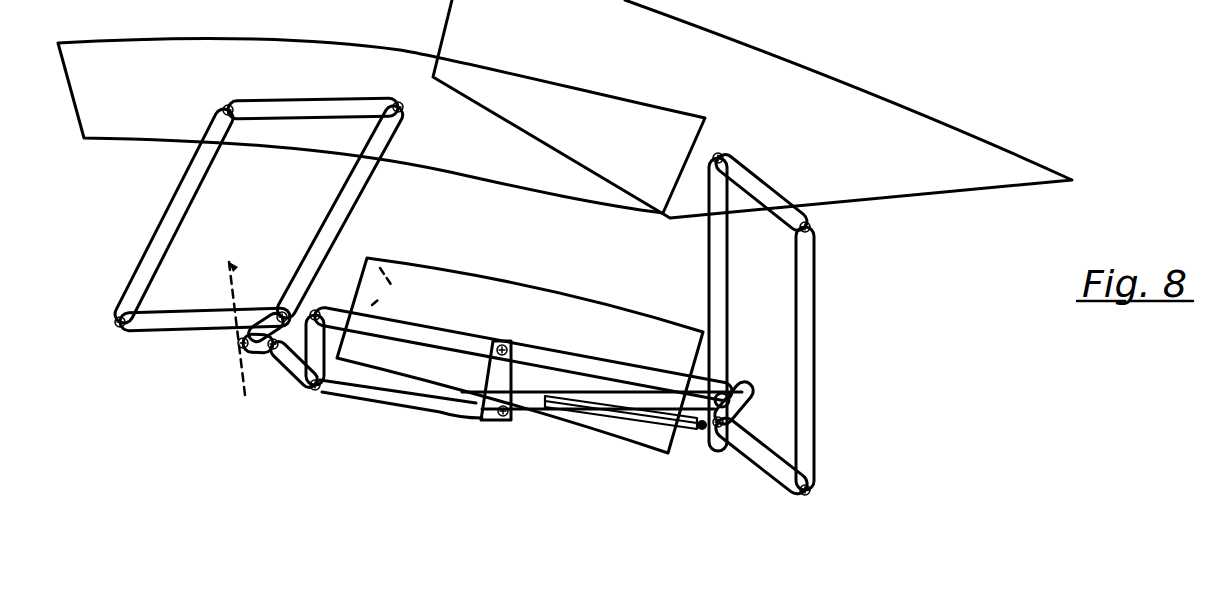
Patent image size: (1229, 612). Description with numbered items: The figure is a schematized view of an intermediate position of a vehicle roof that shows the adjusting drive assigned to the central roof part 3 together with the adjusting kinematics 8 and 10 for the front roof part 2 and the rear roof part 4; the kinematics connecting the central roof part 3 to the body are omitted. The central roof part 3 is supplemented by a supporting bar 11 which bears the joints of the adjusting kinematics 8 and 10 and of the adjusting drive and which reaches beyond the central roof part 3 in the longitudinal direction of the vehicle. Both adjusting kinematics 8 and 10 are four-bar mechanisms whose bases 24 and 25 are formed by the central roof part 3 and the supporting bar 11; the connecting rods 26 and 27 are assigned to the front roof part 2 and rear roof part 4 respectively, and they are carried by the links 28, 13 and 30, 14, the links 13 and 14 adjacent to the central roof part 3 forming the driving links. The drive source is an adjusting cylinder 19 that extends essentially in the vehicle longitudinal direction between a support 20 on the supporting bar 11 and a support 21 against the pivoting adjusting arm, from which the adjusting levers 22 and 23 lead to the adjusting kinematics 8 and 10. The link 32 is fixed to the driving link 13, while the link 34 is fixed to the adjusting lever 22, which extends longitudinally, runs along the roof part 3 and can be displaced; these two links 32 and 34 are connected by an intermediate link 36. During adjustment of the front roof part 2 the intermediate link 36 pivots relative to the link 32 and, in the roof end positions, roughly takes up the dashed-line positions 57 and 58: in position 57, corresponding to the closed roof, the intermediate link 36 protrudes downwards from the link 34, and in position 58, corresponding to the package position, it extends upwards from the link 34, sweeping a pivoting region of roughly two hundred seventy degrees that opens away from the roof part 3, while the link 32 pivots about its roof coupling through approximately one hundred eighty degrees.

The front roof part 2 is at (97, 81).
The central roof part 3 is at (628, 348).
The rear roof part 4 is at (950, 177).
The adjusting kinematics 8 is at (140, 201).
The adjusting kinematics 10 is at (845, 321).
The supporting bar 11 is at (413, 330).
The driving link 13 is at (350, 190).
The driving link 14 is at (725, 272).
The adjusting cylinder 19 is at (613, 428).
The support 20 is at (700, 430).
The support 21 is at (472, 392).
The adjusting lever 22 is at (365, 398).
The adjusting lever 23 is at (672, 394).
The base 24 is at (183, 325).
The base 25 is at (760, 458).
The connecting rod 26 is at (287, 106).
The connecting rod 27 is at (763, 191).
The link 28 is at (163, 238).
The link 30 is at (806, 283).
The link 32 is at (262, 312).
The link 34 is at (292, 372).
The intermediate link 36 is at (262, 356).
The position 57 is at (386, 249).
The position 58 is at (240, 266).